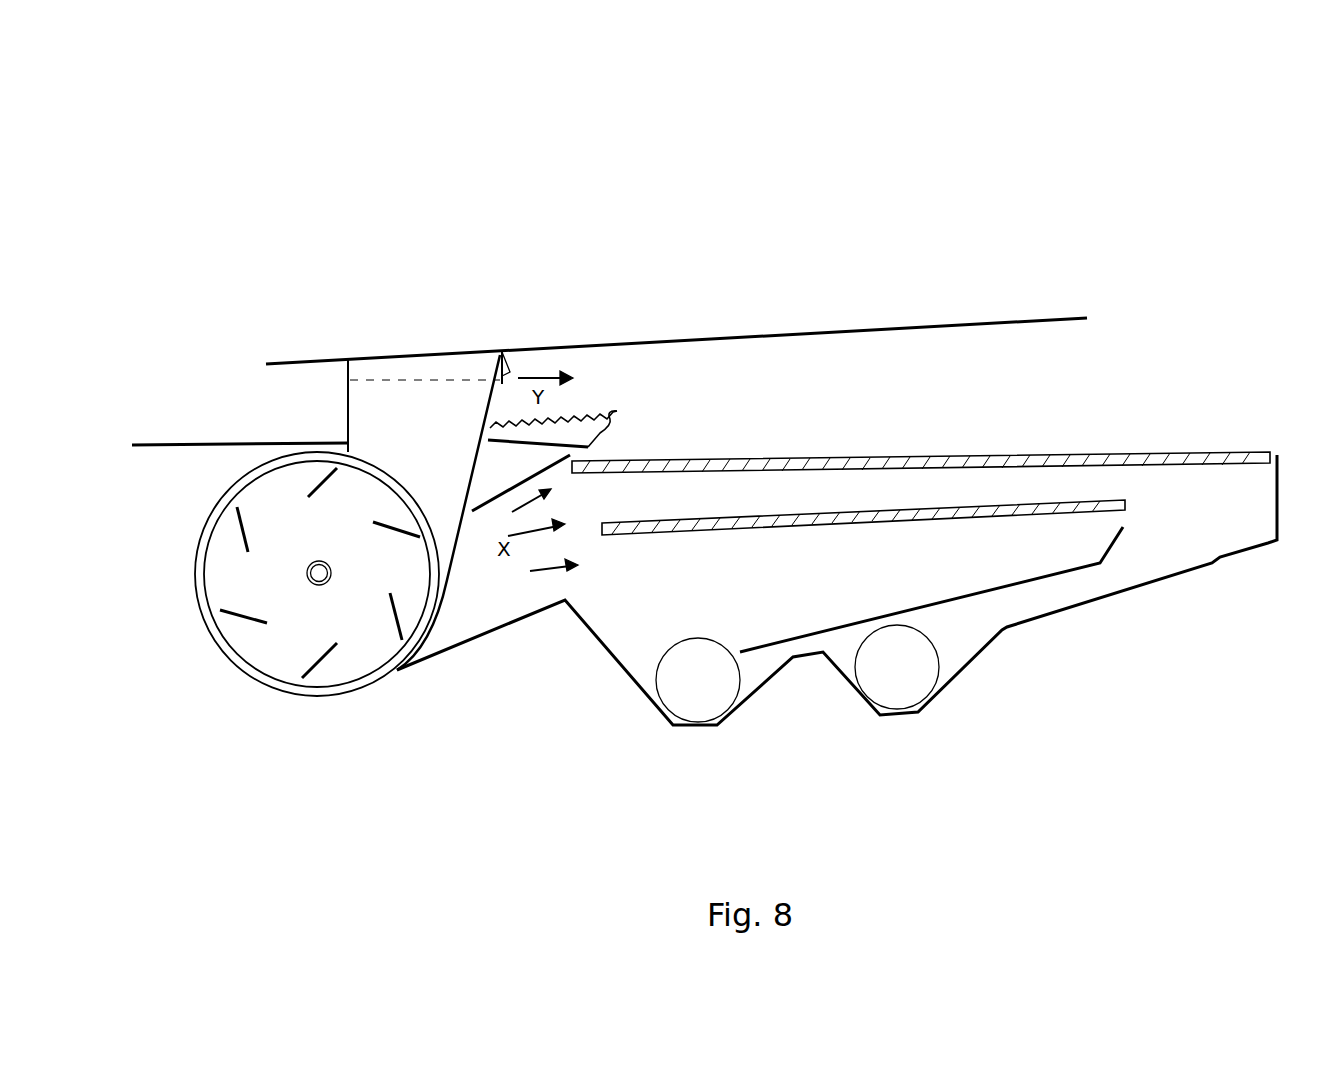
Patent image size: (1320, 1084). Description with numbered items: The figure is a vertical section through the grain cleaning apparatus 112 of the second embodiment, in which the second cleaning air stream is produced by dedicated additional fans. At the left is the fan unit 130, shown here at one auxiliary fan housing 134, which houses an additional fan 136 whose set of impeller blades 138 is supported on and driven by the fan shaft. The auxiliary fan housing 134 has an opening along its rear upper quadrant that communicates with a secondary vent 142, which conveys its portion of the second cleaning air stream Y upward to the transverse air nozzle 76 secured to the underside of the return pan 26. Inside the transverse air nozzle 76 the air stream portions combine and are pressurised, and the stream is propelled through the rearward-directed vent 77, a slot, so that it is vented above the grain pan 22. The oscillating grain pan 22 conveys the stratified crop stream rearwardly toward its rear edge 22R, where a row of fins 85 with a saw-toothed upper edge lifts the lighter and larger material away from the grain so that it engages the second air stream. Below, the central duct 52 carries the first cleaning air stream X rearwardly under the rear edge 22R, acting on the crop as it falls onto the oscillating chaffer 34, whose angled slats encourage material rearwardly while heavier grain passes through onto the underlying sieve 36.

The grain cleaning apparatus 112 is at (178, 172).
The grain pan 22 is at (150, 446).
The rear edge of grain pan 22R is at (588, 447).
The return pan 26 is at (995, 322).
The transverse air nozzle 76 is at (443, 353).
The rearward-directed vent 77 is at (504, 378).
The secondary vent 142 is at (360, 417).
The fins 85 is at (617, 412).
The chaffer 34 is at (960, 461).
The sieve 36 is at (787, 520).
The central duct 52 is at (517, 592).
The fan unit 130 is at (195, 681).
The auxiliary fan housing 134 is at (285, 692).
The additional fan 136 is at (370, 673).
The impeller blades 138 is at (308, 497).